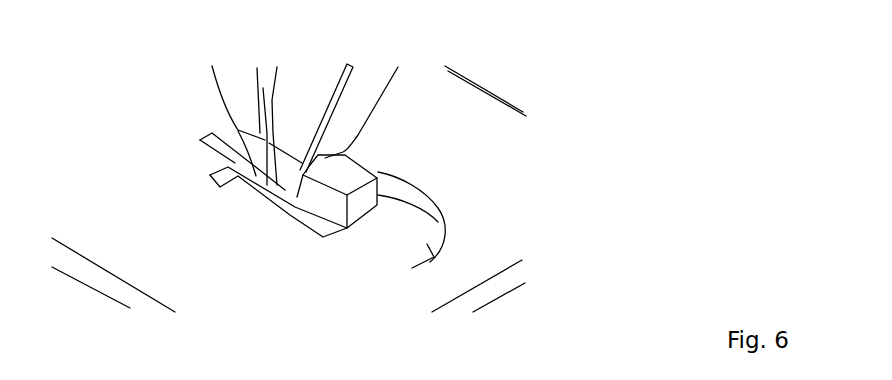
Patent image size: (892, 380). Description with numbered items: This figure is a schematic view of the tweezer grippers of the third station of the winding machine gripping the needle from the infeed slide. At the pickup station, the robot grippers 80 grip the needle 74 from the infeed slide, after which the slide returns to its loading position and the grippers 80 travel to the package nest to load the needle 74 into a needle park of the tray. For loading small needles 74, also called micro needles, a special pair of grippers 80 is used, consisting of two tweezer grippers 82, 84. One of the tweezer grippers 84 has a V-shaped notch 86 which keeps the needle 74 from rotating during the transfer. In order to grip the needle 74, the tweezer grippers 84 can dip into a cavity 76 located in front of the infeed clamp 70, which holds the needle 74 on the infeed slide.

The infeed clamp 70 is at (358, 180).
The needle 74 is at (447, 213).
The cavity 76 is at (238, 183).
The robot grippers 80 is at (190, 85).
The tweezer gripper 82 is at (247, 88).
The tweezer gripper 84 is at (324, 83).
The V-shaped notch 86 is at (295, 197).